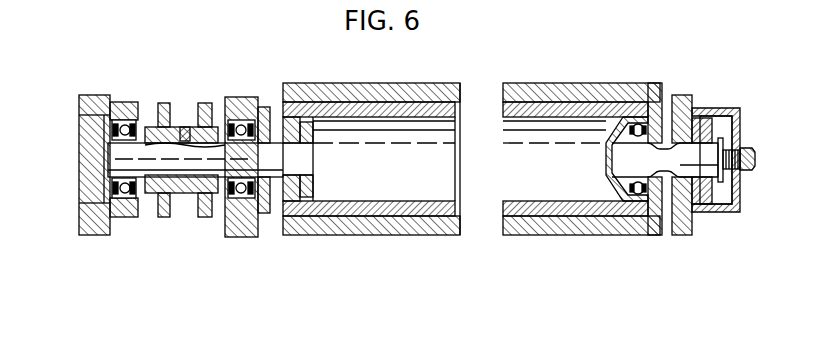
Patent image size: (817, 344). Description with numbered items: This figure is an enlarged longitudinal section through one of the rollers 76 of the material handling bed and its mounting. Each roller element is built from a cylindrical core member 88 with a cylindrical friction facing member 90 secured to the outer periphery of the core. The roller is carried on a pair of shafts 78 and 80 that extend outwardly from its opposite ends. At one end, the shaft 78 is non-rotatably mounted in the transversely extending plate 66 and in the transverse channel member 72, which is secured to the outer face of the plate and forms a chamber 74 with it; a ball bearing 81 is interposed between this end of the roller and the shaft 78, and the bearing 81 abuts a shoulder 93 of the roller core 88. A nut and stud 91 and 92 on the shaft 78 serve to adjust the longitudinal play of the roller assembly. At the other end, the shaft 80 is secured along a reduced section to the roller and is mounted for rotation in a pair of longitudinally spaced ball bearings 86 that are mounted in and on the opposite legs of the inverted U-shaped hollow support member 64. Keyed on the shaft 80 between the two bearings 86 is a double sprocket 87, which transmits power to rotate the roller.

The transverse hollow support member 64 is at (232, 97).
The transversely extending plate 66 is at (690, 97).
The transverse channel member 72 is at (739, 144).
The chamber 74 is at (722, 132).
The roller 76 is at (390, 136).
The shaft 78 is at (700, 175).
The shaft 80 is at (275, 145).
The ball bearing 81 is at (658, 112).
The ball bearings 86 is at (118, 102).
The double sprocket 87 is at (166, 103).
The cylindrical core member 88 is at (594, 149).
The cylindrical friction facing member 90 is at (458, 92).
The nut 91 is at (757, 159).
The stud 92 is at (745, 178).
The shoulder 93 is at (622, 112).